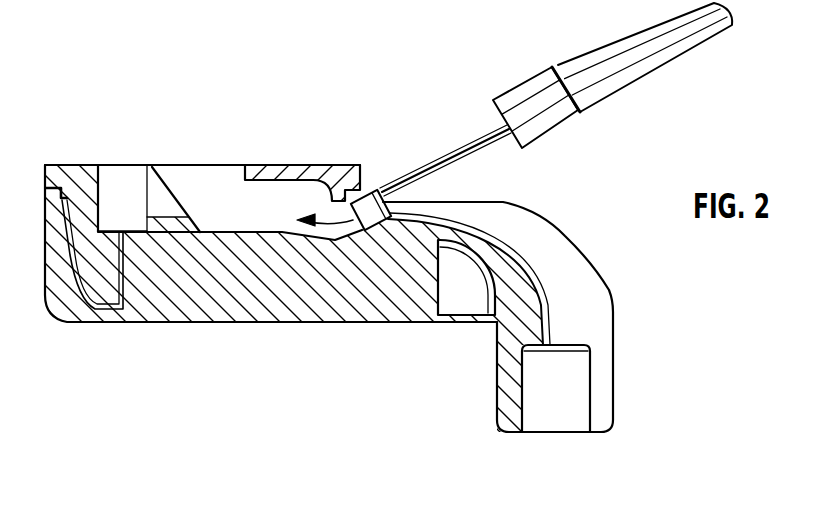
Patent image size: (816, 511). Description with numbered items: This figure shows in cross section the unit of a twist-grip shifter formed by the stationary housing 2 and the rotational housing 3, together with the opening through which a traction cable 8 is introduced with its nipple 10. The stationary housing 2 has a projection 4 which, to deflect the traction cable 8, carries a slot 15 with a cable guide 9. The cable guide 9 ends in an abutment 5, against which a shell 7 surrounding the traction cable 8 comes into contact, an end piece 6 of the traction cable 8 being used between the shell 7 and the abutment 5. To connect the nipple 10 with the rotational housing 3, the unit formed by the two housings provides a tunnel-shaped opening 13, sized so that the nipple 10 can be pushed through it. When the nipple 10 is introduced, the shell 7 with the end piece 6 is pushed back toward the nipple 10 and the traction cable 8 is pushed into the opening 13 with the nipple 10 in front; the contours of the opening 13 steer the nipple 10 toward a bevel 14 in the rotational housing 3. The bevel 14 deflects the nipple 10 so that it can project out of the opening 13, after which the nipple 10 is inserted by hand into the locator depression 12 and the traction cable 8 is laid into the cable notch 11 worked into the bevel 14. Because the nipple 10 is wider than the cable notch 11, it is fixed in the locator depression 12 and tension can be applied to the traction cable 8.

The stationary housing 2 is at (213, 322).
The rotational housing 3 is at (73, 172).
The projection 4 is at (510, 398).
The abutment 5 is at (565, 350).
The end piece 6 is at (535, 88).
The shell 7 is at (684, 42).
The traction cable 8 is at (465, 145).
The cable guide 9 is at (527, 253).
The nipple 10 is at (373, 185).
The cable notch 11 is at (158, 185).
The locator depression 12 is at (128, 178).
The tunnel-shaped opening 13 is at (240, 172).
The bevel 14 is at (175, 190).
The slot 15 is at (607, 308).